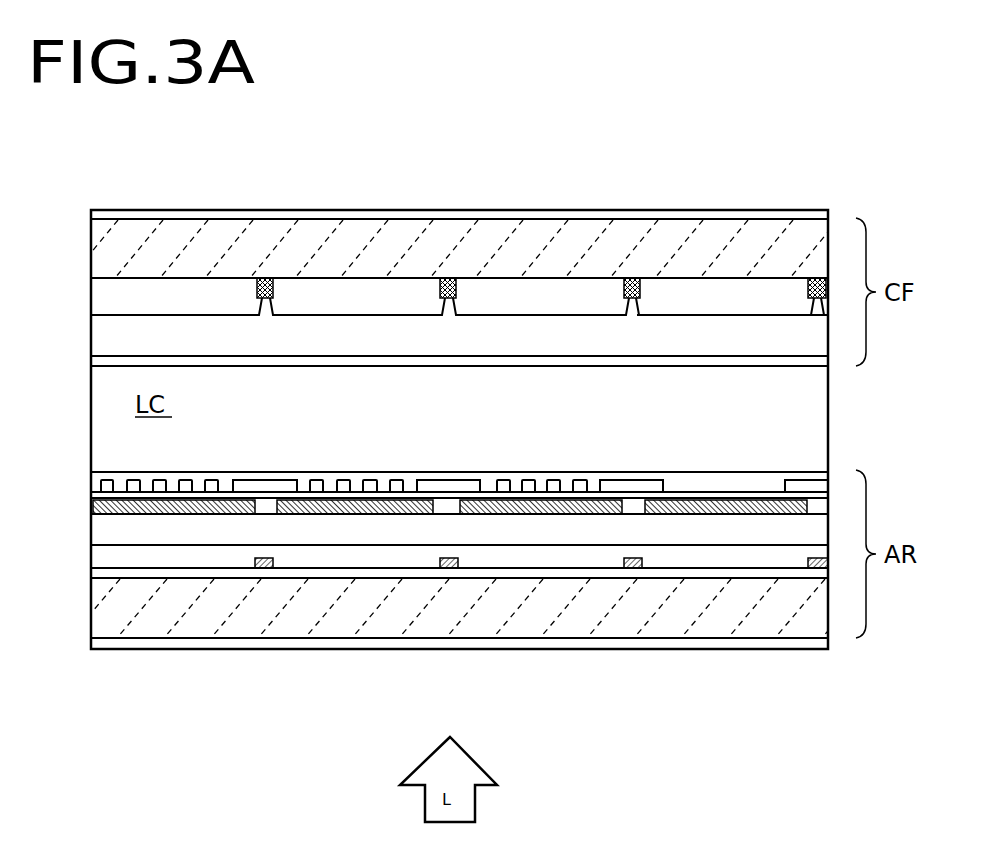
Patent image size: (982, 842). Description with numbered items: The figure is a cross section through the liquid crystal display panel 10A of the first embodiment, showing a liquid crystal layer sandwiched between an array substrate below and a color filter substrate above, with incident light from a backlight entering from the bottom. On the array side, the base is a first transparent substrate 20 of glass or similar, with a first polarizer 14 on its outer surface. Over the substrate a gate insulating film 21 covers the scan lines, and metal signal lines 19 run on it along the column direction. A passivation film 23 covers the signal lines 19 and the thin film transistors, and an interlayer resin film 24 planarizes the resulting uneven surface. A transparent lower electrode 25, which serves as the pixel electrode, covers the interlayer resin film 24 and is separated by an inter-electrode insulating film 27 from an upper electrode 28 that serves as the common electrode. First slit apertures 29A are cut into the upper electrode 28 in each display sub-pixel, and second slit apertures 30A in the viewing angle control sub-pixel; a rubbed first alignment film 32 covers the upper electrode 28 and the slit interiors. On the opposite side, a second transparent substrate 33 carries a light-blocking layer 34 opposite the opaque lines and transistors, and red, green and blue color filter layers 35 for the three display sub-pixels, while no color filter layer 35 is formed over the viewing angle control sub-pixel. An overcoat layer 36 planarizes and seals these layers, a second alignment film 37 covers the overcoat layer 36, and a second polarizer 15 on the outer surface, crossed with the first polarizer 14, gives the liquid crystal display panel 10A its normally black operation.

The liquid crystal display panel 10A is at (148, 150).
The first polarizer 14 is at (146, 646).
The second polarizer 15 is at (268, 216).
The signal line 19 is at (263, 569).
The first transparent substrate 20 is at (203, 608).
The gate insulating film 21 is at (320, 579).
The passivation film 23 is at (380, 560).
The interlayer resin film 24 is at (518, 532).
The lower electrode 25 is at (331, 500).
The inter-electrode insulating film 27 is at (381, 497).
The upper electrode 28 is at (503, 482).
The first slit aperture 29A is at (567, 487).
The second slit aperture 30A is at (695, 488).
The first alignment film 32 is at (752, 480).
The second transparent substrate 33 is at (343, 263).
The light-blocking layer 34 is at (633, 279).
The color filter layer 35 is at (548, 283).
The overcoat layer 36 is at (722, 323).
The second alignment film 37 is at (782, 362).